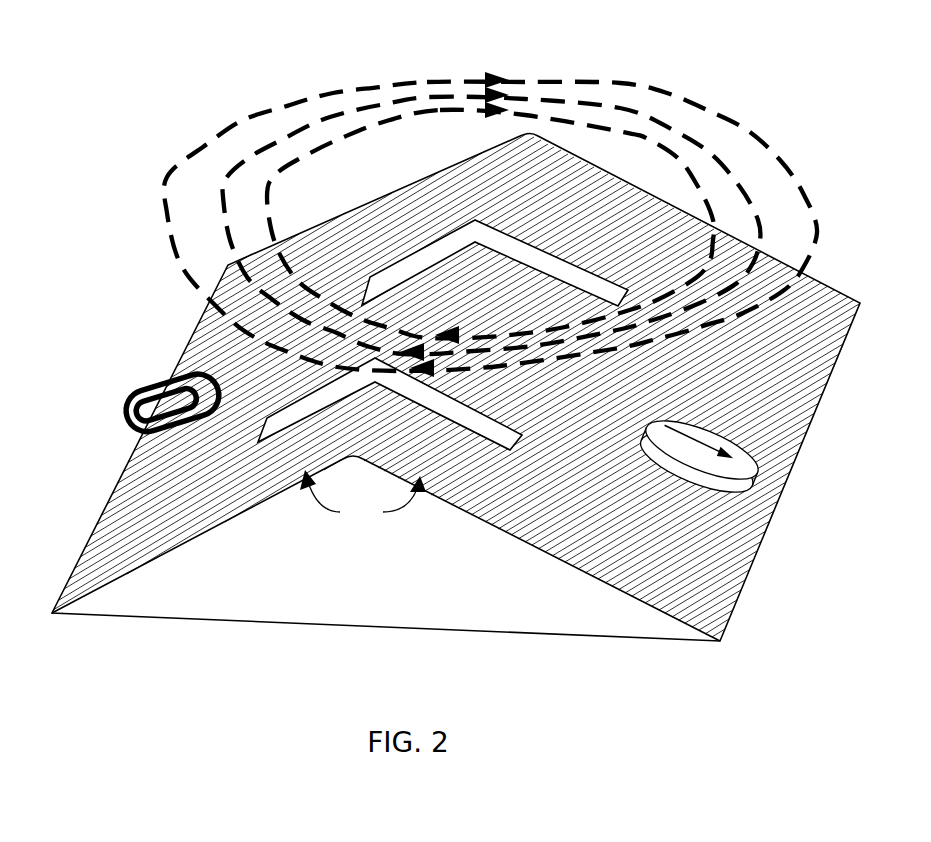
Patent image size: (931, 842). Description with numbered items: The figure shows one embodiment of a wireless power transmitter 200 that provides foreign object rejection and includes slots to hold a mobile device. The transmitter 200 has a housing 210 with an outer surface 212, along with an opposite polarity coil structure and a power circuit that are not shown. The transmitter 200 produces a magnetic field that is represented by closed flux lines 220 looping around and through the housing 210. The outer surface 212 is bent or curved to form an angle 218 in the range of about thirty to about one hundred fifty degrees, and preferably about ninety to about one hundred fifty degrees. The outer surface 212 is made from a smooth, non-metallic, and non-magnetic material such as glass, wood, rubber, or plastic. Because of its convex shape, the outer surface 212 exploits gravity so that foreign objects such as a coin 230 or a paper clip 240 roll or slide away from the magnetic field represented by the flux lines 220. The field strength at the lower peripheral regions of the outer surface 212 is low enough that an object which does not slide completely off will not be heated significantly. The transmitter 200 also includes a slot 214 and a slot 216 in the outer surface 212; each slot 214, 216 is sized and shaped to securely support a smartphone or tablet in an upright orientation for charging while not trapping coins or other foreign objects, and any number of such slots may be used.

The wireless power transmitter 200 is at (455, 419).
The housing 210 is at (185, 620).
The outer surface 212 is at (125, 542).
The slot 214 is at (465, 408).
The slot 216 is at (380, 280).
The angle 218 is at (363, 495).
The closed flux lines 220 is at (297, 103).
The coin 230 is at (722, 484).
The paper clip 240 is at (190, 373).